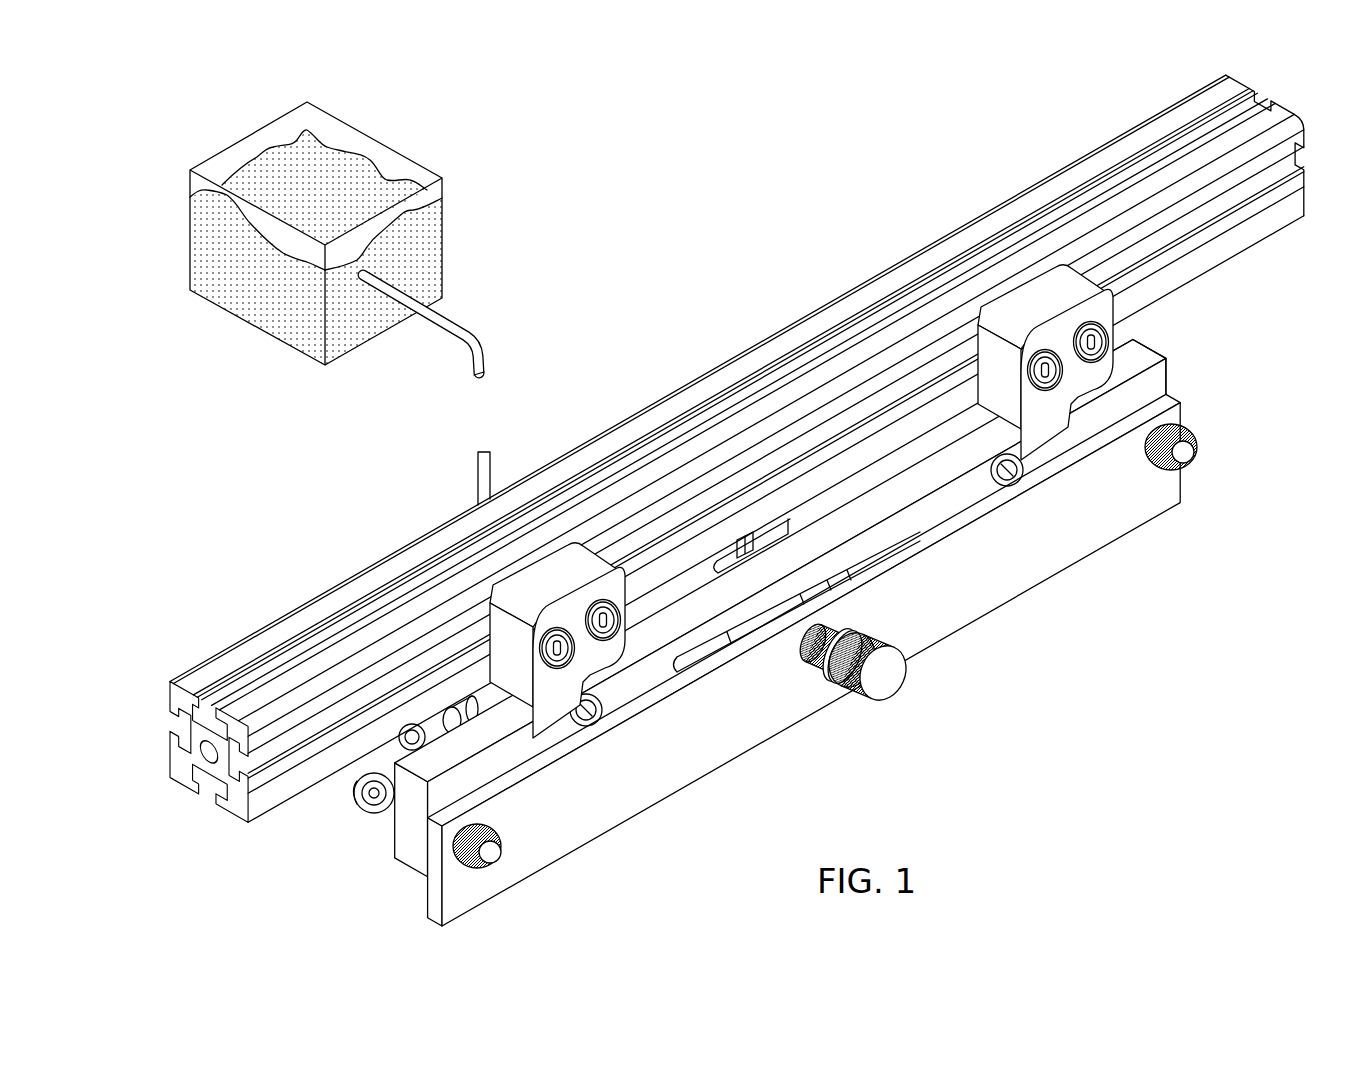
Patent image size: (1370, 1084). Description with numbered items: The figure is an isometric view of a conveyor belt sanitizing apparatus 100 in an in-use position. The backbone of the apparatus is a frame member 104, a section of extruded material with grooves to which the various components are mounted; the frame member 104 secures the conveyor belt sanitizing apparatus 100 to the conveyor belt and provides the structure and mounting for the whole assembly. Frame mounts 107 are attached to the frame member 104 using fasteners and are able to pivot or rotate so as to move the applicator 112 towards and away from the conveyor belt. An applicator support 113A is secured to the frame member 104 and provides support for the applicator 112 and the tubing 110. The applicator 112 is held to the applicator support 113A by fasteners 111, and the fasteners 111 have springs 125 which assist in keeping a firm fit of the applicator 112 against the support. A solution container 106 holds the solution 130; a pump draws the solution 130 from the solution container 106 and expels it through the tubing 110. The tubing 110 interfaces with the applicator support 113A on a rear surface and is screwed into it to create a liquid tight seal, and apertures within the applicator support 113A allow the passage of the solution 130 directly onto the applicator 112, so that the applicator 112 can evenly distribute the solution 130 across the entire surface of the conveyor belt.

The conveyor belt sanitizing apparatus 100 is at (786, 193).
The frame member 104 is at (1278, 115).
The solution container 106 is at (373, 140).
The frame mounts 107 is at (548, 697).
The tubing 110 is at (447, 322).
The fasteners 111 is at (880, 687).
The applicator 112 is at (1150, 480).
The applicator support 113A is at (1140, 353).
The springs 125 is at (363, 797).
The solution 130 is at (258, 302).